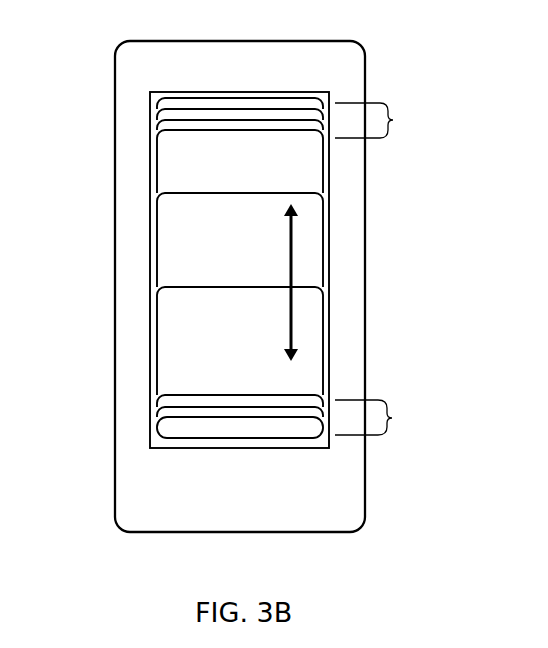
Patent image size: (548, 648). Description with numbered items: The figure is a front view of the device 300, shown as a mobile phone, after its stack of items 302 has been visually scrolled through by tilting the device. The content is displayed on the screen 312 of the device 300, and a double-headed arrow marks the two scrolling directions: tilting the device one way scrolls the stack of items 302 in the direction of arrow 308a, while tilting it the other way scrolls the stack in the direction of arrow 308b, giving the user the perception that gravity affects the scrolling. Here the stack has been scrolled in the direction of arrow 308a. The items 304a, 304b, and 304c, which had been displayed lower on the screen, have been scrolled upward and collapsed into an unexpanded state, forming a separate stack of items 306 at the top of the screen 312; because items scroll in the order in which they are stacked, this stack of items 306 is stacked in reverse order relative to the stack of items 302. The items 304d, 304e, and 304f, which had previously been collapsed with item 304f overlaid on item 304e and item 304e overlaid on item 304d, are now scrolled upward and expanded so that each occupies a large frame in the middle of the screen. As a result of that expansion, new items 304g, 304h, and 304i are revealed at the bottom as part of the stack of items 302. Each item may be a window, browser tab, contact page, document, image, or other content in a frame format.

The device 300 is at (347, 41).
The stack of items 302 is at (380, 417).
The item 304a is at (158, 102).
The item 304b is at (158, 113).
The item 304c is at (158, 127).
The item 304d is at (190, 166).
The item 304e is at (193, 245).
The item 304f is at (193, 348).
The item 304g is at (163, 400).
The item 304h is at (163, 413).
The item 304i is at (163, 427).
The stack of items 306 is at (381, 120).
The arrow 308a is at (294, 207).
The arrow 308b is at (294, 355).
The screen 312 is at (328, 93).